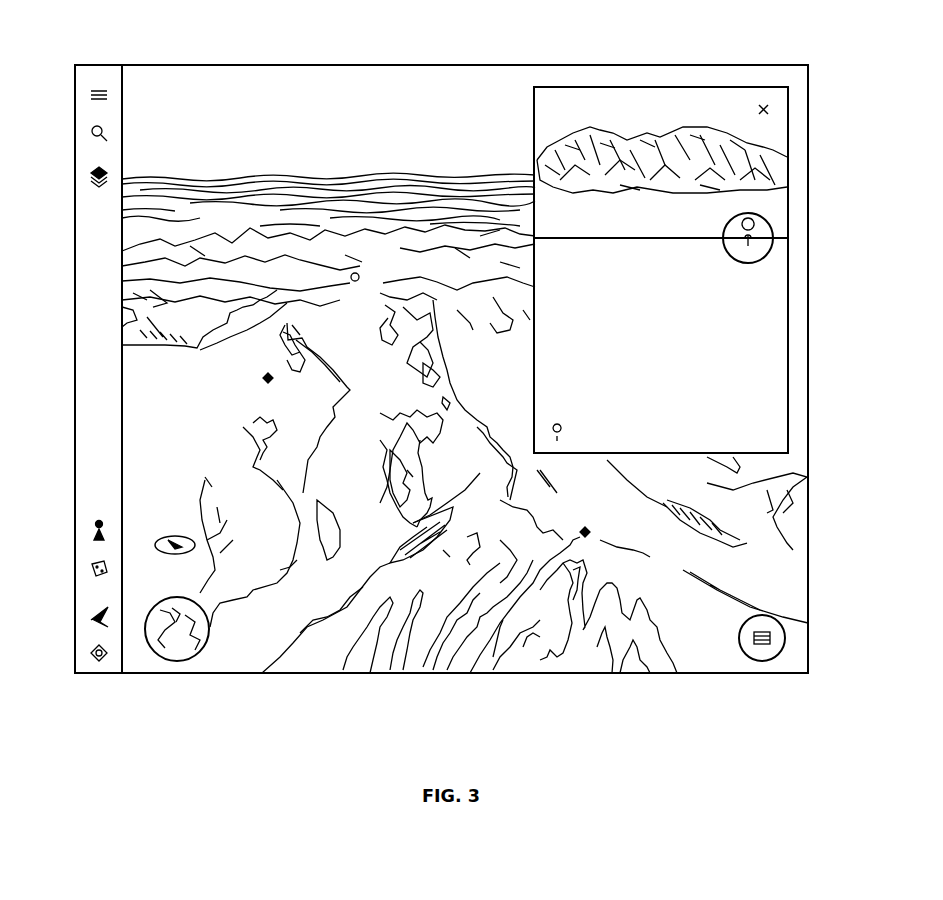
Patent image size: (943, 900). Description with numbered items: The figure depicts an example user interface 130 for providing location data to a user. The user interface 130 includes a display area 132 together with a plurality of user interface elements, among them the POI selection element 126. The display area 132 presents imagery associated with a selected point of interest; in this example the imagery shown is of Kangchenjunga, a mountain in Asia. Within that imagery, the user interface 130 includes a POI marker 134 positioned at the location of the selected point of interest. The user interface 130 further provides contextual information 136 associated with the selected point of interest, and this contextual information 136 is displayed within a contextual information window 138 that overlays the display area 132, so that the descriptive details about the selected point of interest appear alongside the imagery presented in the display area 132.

The POI selection element 126 is at (96, 568).
The user interface 130 is at (95, 299).
The display area 132 is at (380, 76).
The POI marker 134 is at (362, 305).
The contextual information 136 is at (745, 350).
The contextual information window 138 is at (718, 100).